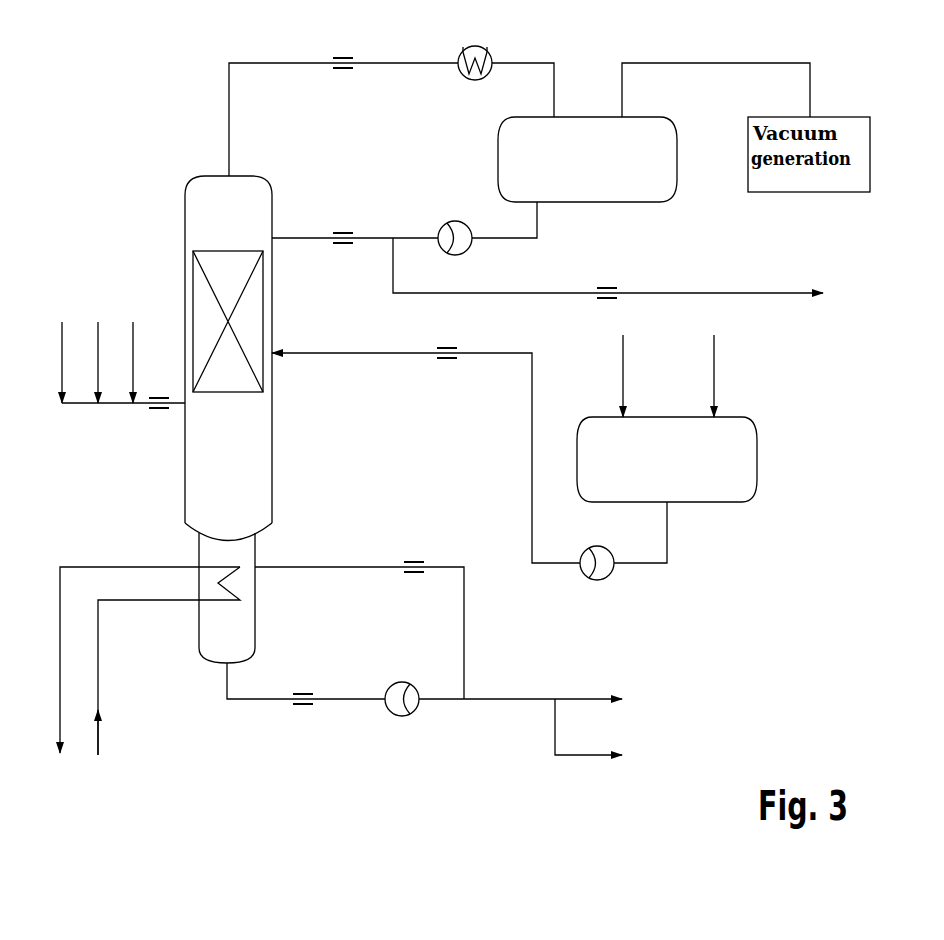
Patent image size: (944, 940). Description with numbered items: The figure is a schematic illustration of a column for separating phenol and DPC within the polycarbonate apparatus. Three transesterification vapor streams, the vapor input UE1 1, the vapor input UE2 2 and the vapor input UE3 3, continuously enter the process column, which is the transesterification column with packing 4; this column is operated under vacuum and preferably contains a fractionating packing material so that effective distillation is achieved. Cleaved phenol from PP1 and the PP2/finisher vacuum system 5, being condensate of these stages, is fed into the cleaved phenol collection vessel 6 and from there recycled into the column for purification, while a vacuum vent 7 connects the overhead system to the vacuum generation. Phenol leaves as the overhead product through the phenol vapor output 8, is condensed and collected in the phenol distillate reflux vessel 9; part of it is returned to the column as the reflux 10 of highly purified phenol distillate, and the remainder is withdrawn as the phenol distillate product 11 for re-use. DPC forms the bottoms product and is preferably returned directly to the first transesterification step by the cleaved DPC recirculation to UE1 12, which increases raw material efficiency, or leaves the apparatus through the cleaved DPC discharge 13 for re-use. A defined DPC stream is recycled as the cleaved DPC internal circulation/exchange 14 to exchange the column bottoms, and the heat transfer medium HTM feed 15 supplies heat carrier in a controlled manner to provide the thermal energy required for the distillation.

The vapor input UE1 1 is at (62, 322).
The vapor input UE2 2 is at (98, 322).
The vapor input UE3 3 is at (133, 322).
The transesterification column with packing 4 is at (196, 251).
The cleaved phenol from PP1 and PP2/finisher vacuum system 5 is at (714, 365).
The cleaved phenol collection vessel 6 is at (757, 460).
The vacuum vent 7 is at (718, 63).
The phenol vapor output 8 is at (229, 118).
The phenol distillate reflux vessel 9 is at (631, 195).
The reflux 10 is at (309, 238).
The phenol distillate product 11 is at (797, 293).
The cleaved DPC recirculation to UE1 12 is at (595, 699).
The cleaved DPC discharge 13 is at (595, 755).
The cleaved DPC internal circulation/exchange 14 is at (337, 567).
The heat transfer medium HTM feed 15 is at (98, 738).